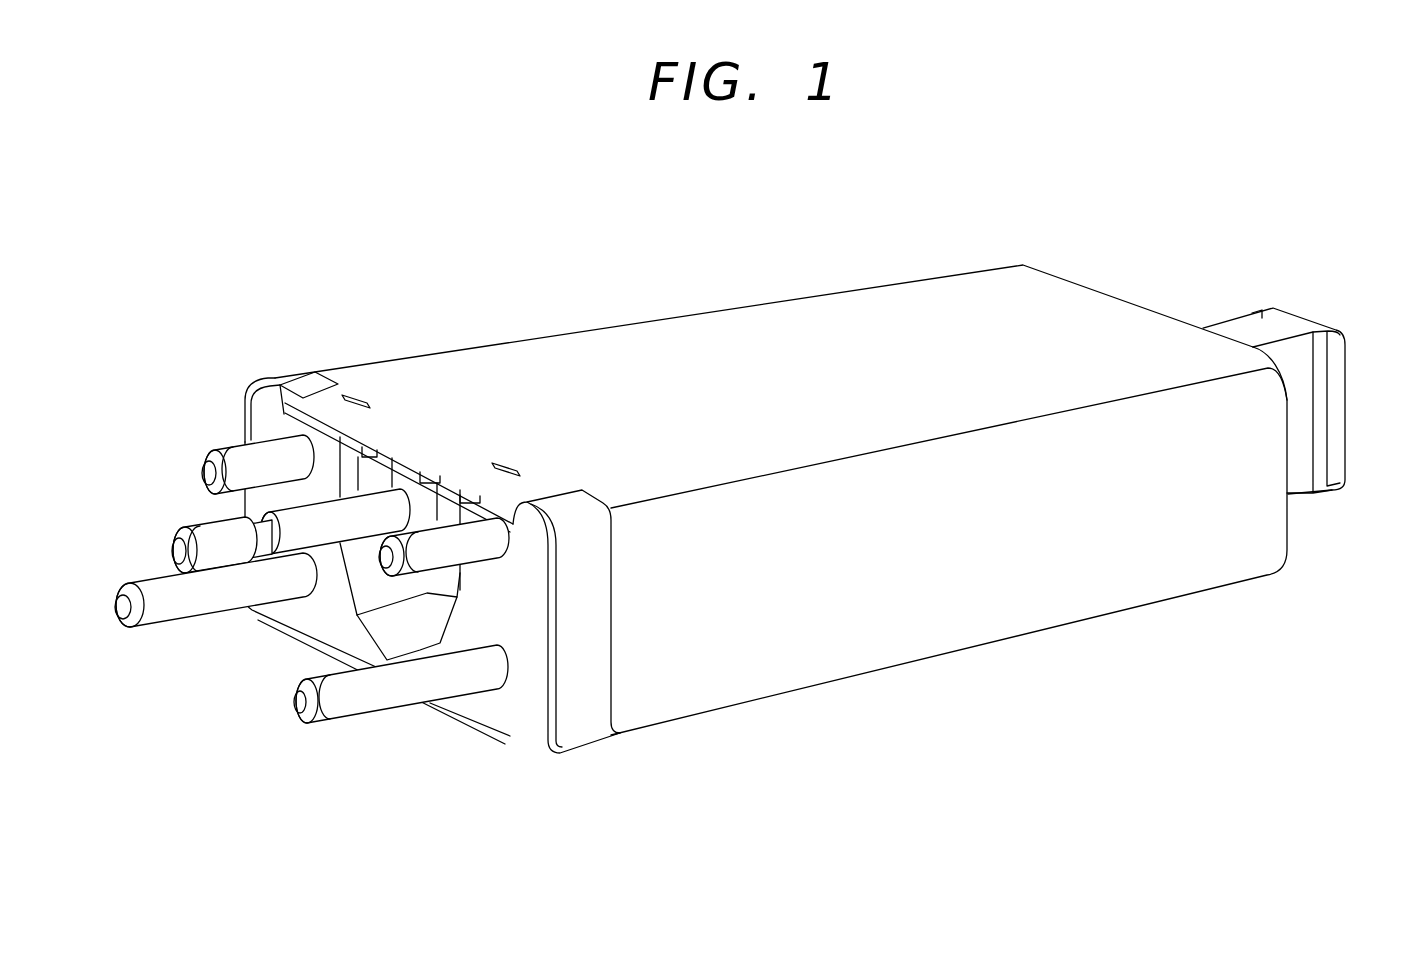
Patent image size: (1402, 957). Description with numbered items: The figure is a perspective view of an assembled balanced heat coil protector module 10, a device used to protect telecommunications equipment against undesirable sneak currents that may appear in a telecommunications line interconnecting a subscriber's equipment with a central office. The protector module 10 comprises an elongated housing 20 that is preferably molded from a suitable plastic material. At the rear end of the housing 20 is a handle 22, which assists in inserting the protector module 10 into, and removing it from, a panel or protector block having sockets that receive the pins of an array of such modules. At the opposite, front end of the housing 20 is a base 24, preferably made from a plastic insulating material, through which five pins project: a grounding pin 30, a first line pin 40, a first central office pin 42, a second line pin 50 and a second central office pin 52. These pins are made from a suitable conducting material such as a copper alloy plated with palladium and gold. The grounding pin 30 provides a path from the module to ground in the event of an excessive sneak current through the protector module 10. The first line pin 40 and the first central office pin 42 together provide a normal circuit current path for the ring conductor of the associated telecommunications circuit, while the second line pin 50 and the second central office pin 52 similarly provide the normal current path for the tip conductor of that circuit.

The balanced heat coil protector module 10 is at (770, 264).
The housing 20 is at (932, 567).
The handle 22 is at (1312, 320).
The base 24 is at (532, 740).
The grounding pin 30 is at (182, 551).
The first line pin 40 is at (214, 474).
The first central office pin 42 is at (162, 632).
The second line pin 50 is at (468, 556).
The second central office pin 52 is at (345, 732).